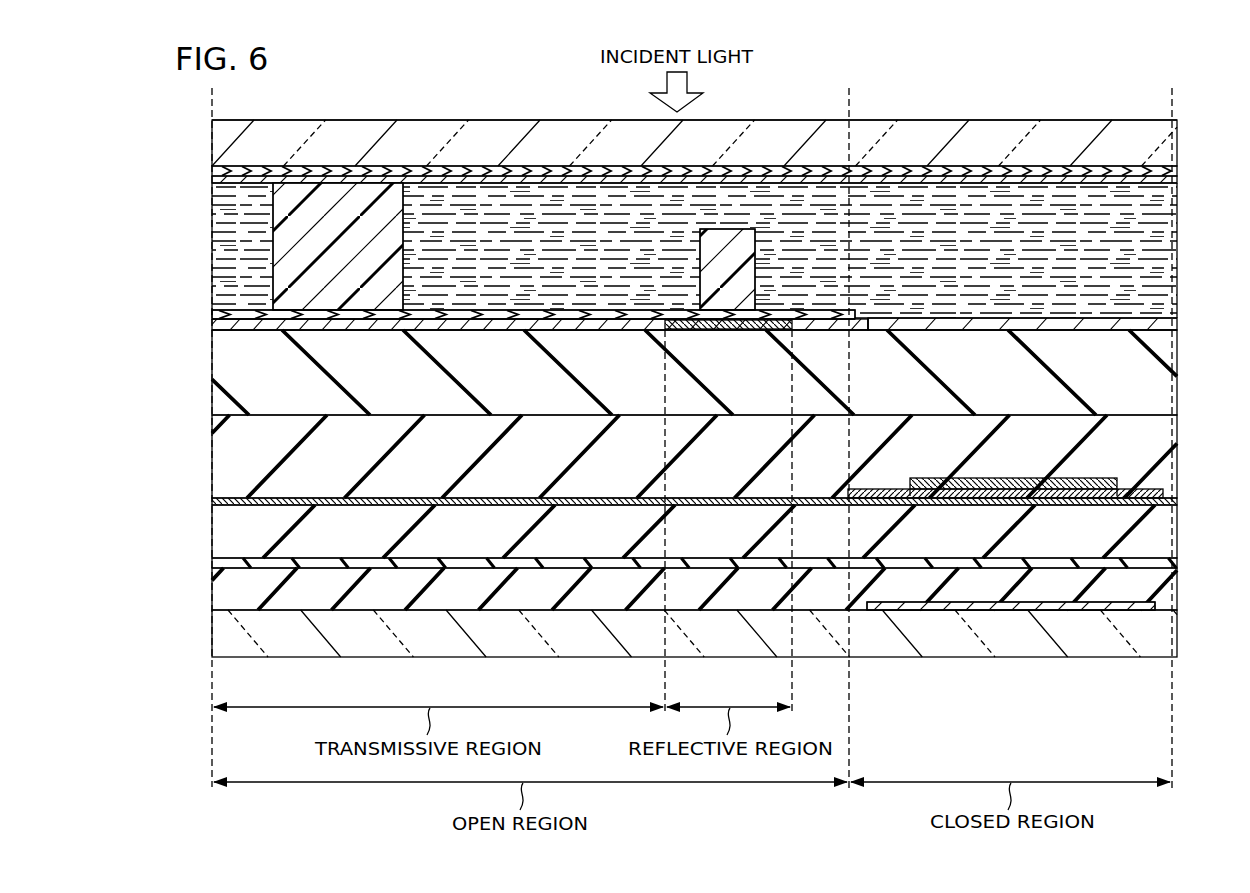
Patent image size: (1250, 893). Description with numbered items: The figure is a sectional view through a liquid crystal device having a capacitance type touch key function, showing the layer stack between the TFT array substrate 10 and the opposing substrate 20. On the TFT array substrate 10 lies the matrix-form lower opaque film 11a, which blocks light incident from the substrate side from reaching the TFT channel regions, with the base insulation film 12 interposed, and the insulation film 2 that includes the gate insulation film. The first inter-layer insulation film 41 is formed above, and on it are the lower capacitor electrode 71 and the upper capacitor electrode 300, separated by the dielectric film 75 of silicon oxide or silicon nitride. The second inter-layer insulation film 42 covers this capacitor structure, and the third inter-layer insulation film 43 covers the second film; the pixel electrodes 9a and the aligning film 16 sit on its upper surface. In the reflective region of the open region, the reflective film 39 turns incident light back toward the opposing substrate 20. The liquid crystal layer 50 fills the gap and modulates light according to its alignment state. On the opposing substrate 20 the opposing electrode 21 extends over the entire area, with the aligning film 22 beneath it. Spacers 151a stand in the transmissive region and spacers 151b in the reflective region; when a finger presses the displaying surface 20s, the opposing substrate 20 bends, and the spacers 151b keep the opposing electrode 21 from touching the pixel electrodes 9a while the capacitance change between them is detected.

The TFT array substrate 10 is at (1160, 630).
The lower opaque film 11a is at (1010, 610).
The base insulation film 12 is at (1160, 589).
The insulation film 2 is at (213, 565).
The first inter-layer insulation film 41 is at (1155, 530).
The dielectric film 75 is at (213, 501).
The lower capacitor electrode 71 is at (1055, 498).
The upper capacitor electrode 300 is at (982, 477).
The second inter-layer insulation film 42 is at (1155, 430).
The third inter-layer insulation film 43 is at (1155, 384).
The reflective film 39 is at (708, 329).
The pixel electrode 9a is at (213, 323).
The aligning film 16 is at (215, 315).
The liquid crystal layer 50 is at (1153, 240).
The spacer 151a is at (293, 241).
The spacer 151b is at (731, 229).
The aligning film 22 is at (1167, 179).
The opposing electrode 21 is at (1160, 171).
The opposing substrate 20 is at (1155, 139).
The displaying surface 20s is at (1082, 112).